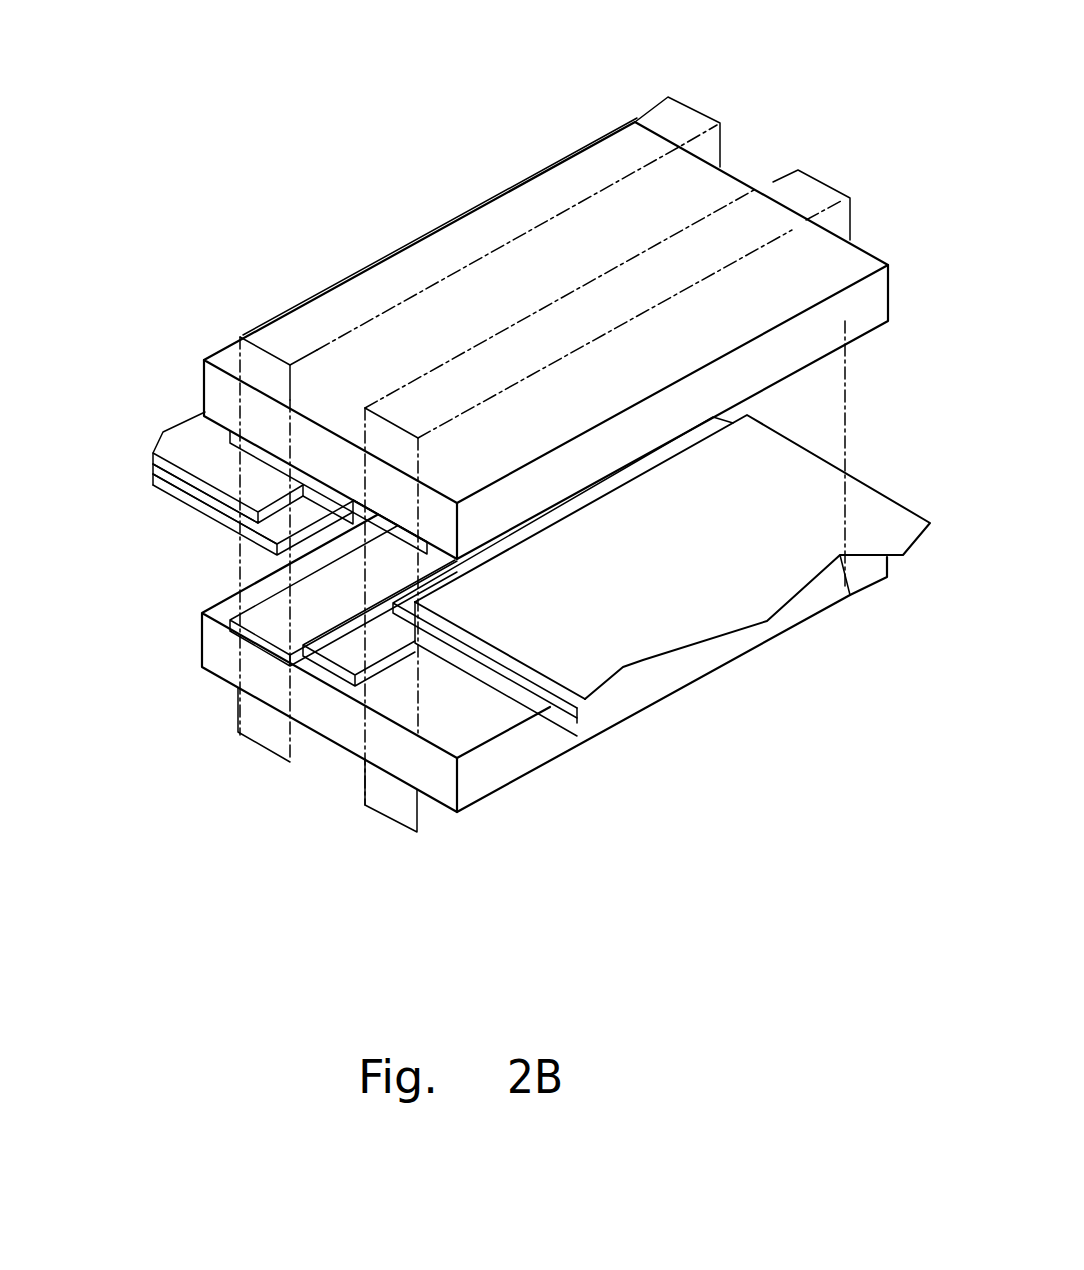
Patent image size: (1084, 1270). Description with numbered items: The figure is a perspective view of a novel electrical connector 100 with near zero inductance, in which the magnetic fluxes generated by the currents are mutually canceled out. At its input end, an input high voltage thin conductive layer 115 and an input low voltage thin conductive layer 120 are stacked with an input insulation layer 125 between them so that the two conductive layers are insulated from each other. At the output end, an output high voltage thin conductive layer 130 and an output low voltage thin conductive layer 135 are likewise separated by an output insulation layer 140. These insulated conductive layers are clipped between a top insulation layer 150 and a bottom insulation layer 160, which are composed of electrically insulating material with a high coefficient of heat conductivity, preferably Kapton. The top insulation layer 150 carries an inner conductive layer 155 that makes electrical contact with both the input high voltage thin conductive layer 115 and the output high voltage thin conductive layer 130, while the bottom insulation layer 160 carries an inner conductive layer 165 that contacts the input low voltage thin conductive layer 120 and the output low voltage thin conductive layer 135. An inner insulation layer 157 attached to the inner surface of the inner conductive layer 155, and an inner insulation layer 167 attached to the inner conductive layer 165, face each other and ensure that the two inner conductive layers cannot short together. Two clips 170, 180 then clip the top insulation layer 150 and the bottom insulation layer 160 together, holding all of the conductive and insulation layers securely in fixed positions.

The electrical connector 100 is at (800, 80).
The input high voltage thin conductive layer 115 is at (494, 650).
The input low voltage thin conductive layer 120 is at (560, 712).
The input insulation layer 125 is at (536, 690).
The output high voltage thin conductive layer 130 is at (160, 440).
The output low voltage thin conductive layer 135 is at (166, 492).
The output insulation layer 140 is at (156, 472).
The top insulation layer 150 is at (877, 300).
The inner conductive layer 155 is at (304, 475).
The inner insulation layer 157 is at (358, 502).
The bottom insulation layer 160 is at (493, 780).
The inner conductive layer 165 is at (378, 703).
The inner insulation layer 167 is at (317, 658).
The clip 170 is at (669, 106).
The clip 180 is at (800, 178).